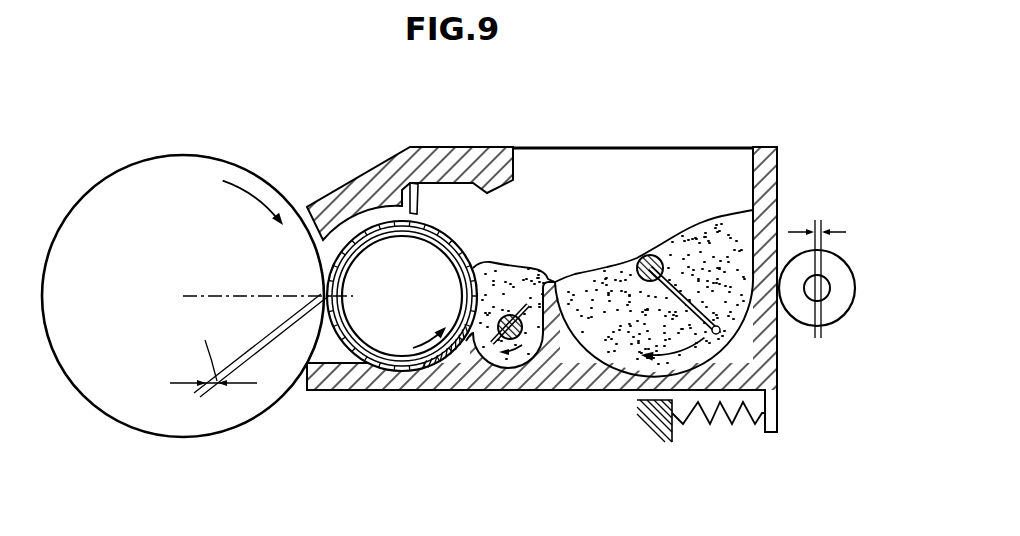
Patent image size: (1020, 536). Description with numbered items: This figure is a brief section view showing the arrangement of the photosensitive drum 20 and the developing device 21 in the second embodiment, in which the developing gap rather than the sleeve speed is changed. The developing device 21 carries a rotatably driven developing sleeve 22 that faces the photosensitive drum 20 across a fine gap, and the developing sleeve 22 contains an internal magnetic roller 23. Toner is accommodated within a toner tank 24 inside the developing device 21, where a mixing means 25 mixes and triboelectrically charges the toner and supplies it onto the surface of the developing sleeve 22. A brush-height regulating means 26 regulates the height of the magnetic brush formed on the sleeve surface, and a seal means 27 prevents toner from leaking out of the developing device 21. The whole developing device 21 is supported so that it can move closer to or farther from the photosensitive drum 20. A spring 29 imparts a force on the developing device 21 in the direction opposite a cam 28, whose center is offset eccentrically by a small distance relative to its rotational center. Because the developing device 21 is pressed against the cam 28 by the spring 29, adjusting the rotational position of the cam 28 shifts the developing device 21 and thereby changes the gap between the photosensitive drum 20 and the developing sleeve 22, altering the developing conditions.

The photosensitive drum 20 is at (167, 168).
The developing device 21 is at (703, 144).
The developing sleeve 22 is at (400, 371).
The magnetic roller 23 is at (377, 335).
The toner tank 24 is at (557, 182).
The mixing means 25 is at (643, 283).
The brush-height regulating means 26 is at (403, 190).
The seal means 27 is at (443, 362).
The cam 28 is at (833, 312).
The spring 29 is at (727, 427).